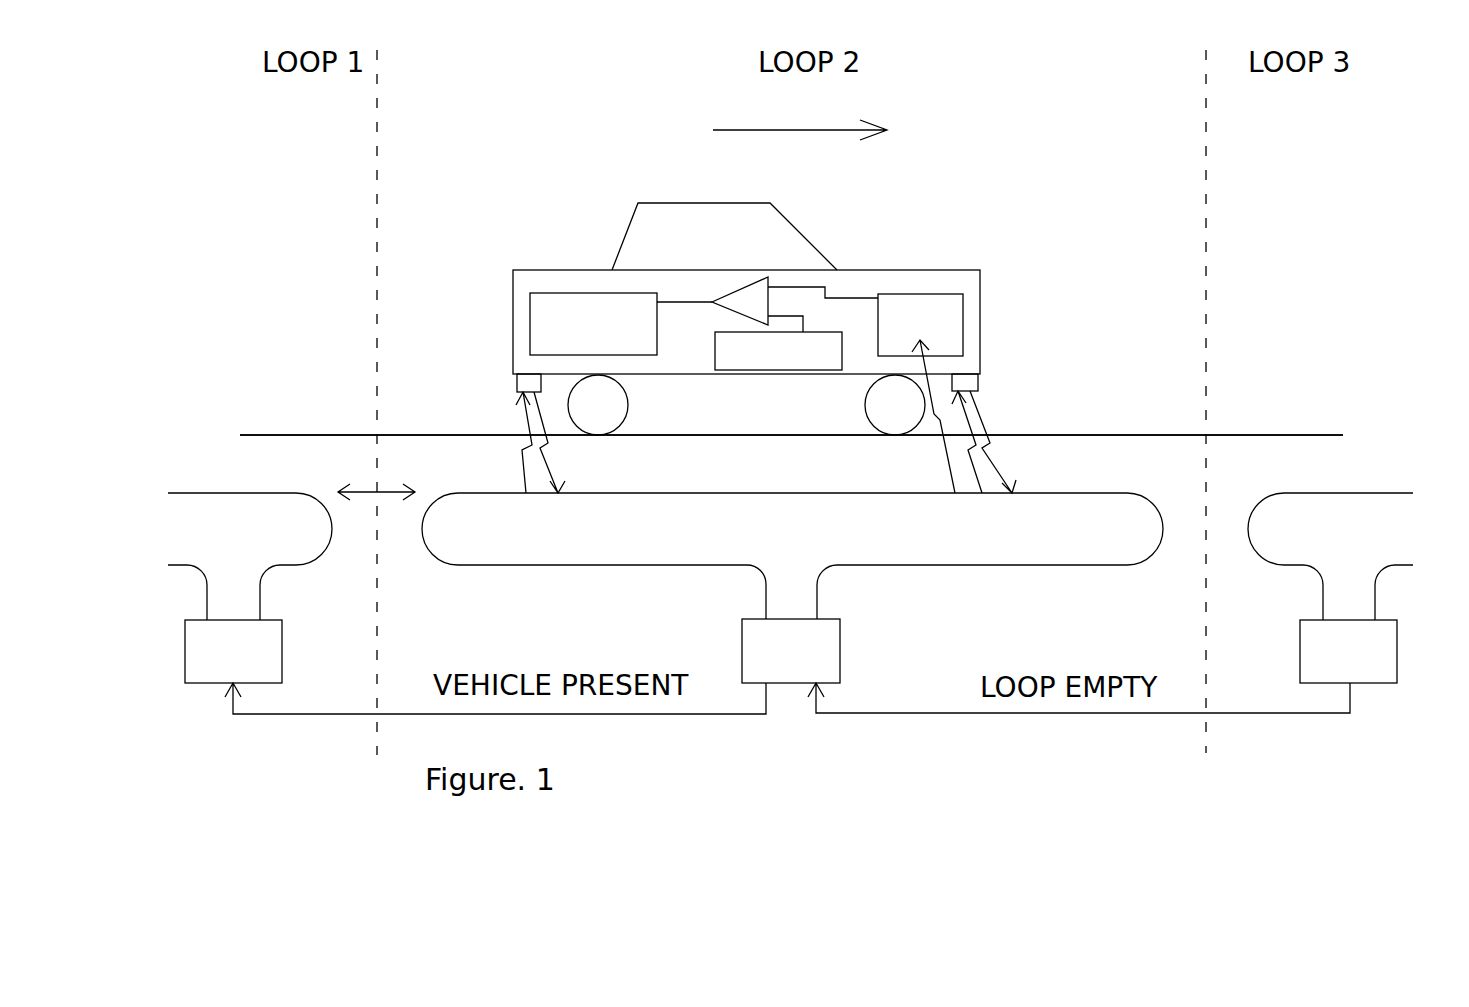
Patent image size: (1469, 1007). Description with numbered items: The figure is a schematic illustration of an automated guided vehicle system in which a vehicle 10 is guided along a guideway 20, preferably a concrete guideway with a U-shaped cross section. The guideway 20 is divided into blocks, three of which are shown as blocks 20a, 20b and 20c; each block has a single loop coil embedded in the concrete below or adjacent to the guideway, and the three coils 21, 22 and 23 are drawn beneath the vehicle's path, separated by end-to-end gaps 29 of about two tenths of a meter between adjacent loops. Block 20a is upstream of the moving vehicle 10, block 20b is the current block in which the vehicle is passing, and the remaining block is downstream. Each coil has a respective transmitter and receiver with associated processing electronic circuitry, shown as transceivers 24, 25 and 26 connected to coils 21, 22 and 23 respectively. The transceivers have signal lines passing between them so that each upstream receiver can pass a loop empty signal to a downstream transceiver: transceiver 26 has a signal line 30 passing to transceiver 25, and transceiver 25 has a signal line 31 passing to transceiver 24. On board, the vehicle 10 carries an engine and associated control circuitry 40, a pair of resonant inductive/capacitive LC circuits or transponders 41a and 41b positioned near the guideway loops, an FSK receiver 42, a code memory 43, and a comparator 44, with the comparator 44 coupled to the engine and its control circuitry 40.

The vehicle 10 is at (980, 292).
The guideway 20 is at (1252, 435).
The block 20a is at (270, 435).
The block 20b is at (437, 435).
The block 20c is at (1310, 435).
The coil 21 is at (228, 493).
The coil 22 is at (485, 493).
The coil 23 is at (1352, 493).
The transceiver 24 is at (282, 638).
The transceiver 25 is at (840, 648).
The transceiver 26 is at (1300, 639).
The end-to-end gap 29 is at (382, 492).
The signal line 30 is at (998, 713).
The signal line 31 is at (587, 714).
The engine and associated control circuitry 40 is at (570, 293).
The transponder 41a is at (517, 382).
The transponder 41b is at (978, 382).
The FSK receiver 42 is at (922, 305).
The code memory 43 is at (753, 370).
The comparator 44 is at (747, 285).